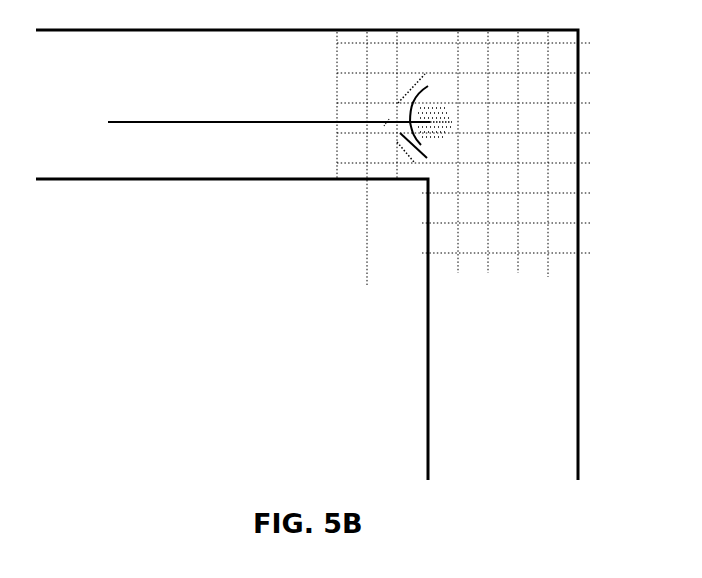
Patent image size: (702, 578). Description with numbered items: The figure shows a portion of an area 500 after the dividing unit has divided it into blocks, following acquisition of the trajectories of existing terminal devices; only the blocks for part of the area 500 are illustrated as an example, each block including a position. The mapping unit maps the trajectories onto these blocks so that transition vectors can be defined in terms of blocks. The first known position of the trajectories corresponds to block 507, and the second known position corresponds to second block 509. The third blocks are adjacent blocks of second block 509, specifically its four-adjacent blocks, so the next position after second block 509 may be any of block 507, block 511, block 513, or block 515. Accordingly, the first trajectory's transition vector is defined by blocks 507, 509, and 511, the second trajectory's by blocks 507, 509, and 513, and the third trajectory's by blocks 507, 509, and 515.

The area 500 is at (318, 311).
The block 507 is at (280, 112).
The second block 509 is at (394, 88).
The block 511 is at (443, 93).
The block 513 is at (459, 122).
The block 515 is at (436, 147).